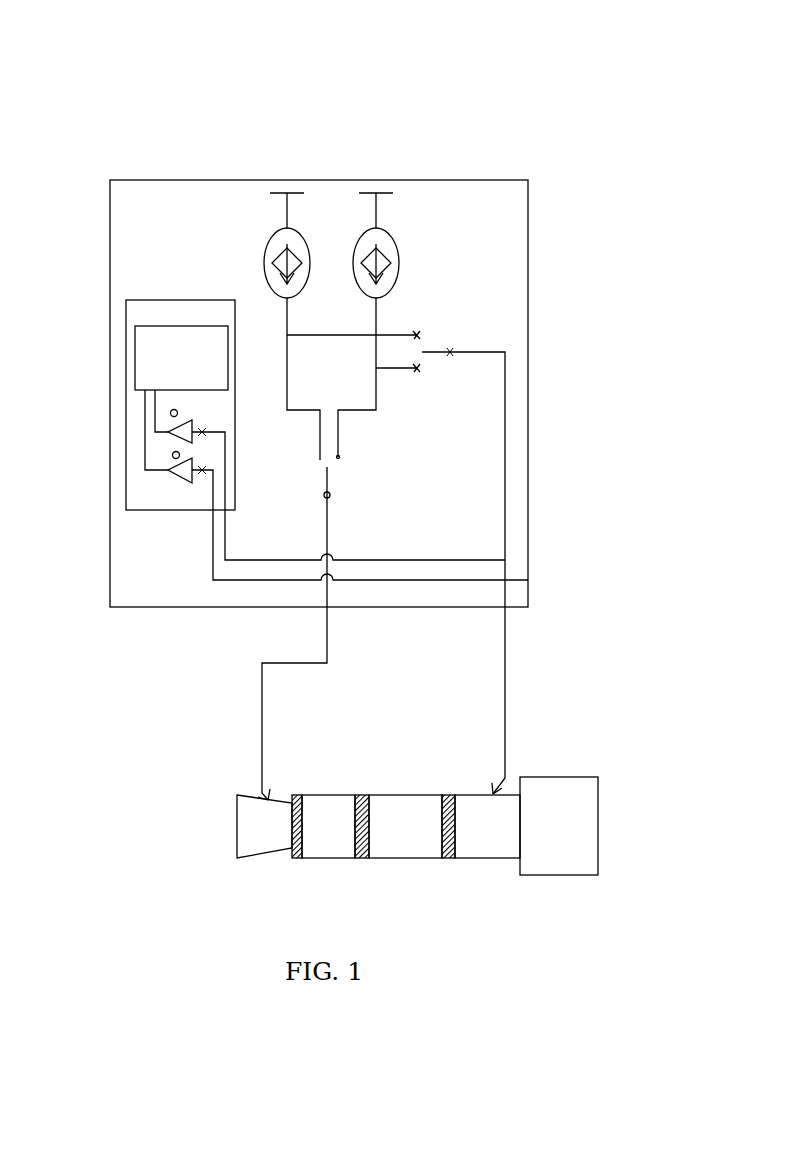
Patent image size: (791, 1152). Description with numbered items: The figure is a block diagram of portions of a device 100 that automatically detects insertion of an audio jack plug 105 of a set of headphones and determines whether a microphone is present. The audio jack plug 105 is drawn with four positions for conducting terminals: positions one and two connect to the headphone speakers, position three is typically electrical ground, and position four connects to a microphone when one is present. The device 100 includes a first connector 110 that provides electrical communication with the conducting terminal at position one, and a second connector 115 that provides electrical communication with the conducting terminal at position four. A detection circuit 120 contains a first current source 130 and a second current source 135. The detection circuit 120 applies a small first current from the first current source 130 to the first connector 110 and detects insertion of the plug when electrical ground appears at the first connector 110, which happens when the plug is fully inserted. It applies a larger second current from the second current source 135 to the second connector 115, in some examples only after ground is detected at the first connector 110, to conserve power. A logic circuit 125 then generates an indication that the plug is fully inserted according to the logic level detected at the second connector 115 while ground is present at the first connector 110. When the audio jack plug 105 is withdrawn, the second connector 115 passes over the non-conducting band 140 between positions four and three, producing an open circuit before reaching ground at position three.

The device 100 is at (632, 82).
The audio jack plug 105 is at (600, 858).
The first connector 110 is at (254, 772).
The second connector 115 is at (512, 748).
The detection circuit 120 is at (530, 203).
The logic circuit 125 is at (127, 358).
The first current source 130 is at (263, 240).
The second current source 135 is at (398, 241).
The non-conducting band 140 is at (447, 862).